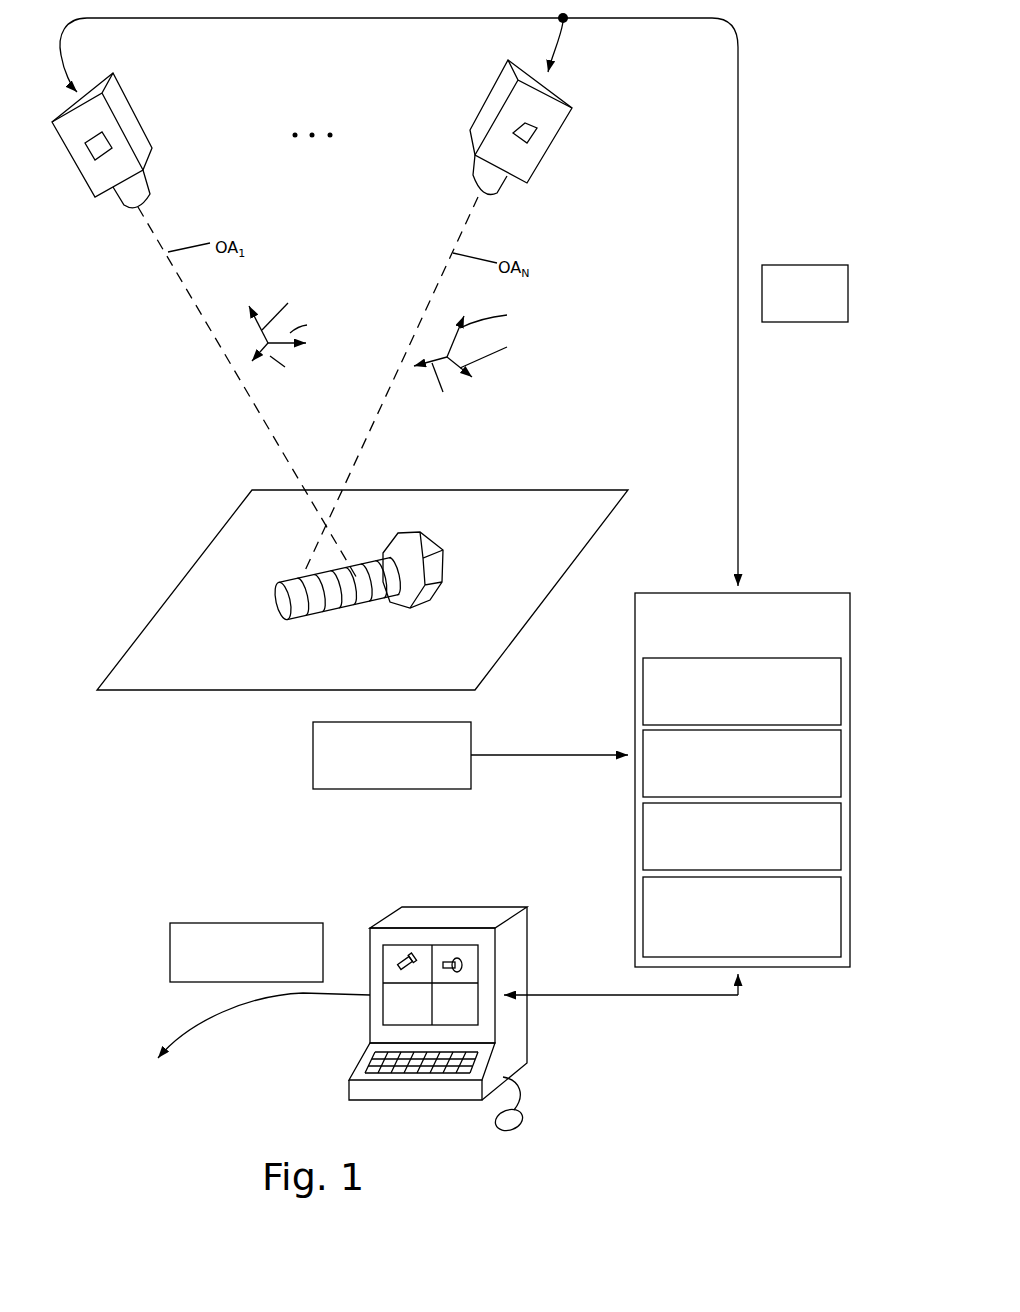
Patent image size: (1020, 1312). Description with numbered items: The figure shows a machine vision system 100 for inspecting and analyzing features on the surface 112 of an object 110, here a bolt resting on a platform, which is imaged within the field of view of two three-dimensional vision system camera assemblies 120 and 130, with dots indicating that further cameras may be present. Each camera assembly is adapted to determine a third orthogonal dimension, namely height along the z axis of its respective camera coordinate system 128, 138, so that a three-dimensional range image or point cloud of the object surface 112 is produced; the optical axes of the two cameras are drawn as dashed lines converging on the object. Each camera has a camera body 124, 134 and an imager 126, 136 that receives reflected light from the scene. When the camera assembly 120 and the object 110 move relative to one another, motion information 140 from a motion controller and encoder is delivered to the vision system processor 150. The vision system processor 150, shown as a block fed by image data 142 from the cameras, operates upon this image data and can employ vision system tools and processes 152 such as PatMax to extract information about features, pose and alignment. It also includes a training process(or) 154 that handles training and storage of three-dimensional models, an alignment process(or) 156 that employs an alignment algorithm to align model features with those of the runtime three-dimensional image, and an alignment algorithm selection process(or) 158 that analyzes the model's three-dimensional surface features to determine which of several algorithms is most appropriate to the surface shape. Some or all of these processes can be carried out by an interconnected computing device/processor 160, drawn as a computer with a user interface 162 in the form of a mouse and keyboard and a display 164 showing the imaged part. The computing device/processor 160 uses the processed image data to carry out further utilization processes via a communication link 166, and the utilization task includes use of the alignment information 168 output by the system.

The vision system 100 is at (762, 143).
The object 110 is at (446, 533).
The object surface 112 is at (354, 610).
The 3D vision system camera assembly 120 is at (148, 113).
The camera body 124 is at (148, 162).
The imager 126 is at (102, 132).
The camera coordinate system 128 is at (257, 323).
The 3D vision system camera assembly 130 is at (478, 98).
The camera body 134 is at (472, 145).
The imager 136 is at (522, 118).
The camera coordinate system 138 is at (438, 348).
The motion information 140 is at (390, 790).
The image data 142 is at (798, 323).
The vision system processor 150 is at (814, 586).
The vision system tools and processes 152 is at (842, 673).
The training process(or) 154 is at (842, 758).
The alignment process(or) 156 is at (842, 837).
The 3D alignment algorithm selection process(or) 158 is at (842, 920).
The computing device/processor 160 is at (496, 898).
The user interface 162 is at (440, 1075).
The display 164 is at (470, 1009).
The communication link 166 is at (217, 1015).
The 3D alignment information 168 is at (230, 923).